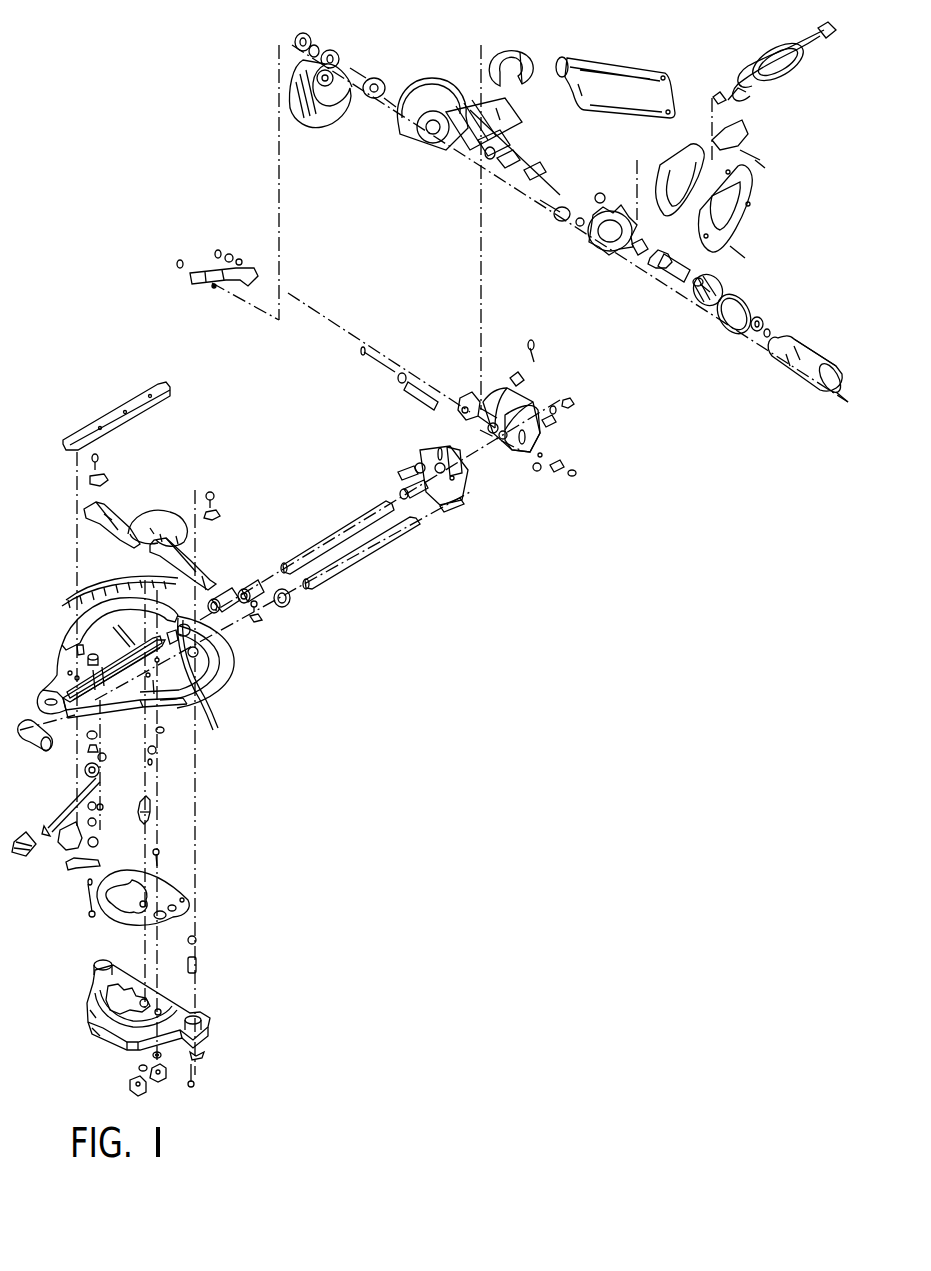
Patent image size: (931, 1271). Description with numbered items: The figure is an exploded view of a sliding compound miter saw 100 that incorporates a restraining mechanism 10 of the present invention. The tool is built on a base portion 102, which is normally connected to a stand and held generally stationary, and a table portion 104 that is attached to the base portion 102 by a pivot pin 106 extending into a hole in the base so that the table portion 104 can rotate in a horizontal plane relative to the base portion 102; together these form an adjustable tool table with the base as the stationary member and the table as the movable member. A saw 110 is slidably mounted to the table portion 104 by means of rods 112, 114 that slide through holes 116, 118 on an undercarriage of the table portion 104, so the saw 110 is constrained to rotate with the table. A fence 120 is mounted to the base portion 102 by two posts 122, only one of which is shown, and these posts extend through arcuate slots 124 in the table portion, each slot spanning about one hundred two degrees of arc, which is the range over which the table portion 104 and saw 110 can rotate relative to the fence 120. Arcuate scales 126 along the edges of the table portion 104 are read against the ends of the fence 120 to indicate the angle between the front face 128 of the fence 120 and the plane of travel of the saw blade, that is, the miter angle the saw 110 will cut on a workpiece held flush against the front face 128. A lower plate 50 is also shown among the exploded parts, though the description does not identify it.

The restraining mechanism 10 is at (130, 790).
The lower base plate 50 is at (156, 892).
The sliding compound miter saw 100 is at (545, 728).
The base portion 102 is at (165, 1000).
The table portion 104 is at (217, 652).
The pivot pin 106 is at (150, 810).
The saw 110 is at (420, 62).
The rod 112 is at (322, 540).
The rod 114 is at (368, 546).
The hole 116 is at (196, 692).
The hole 118 is at (208, 682).
The fence 120 is at (166, 525).
The post 122 is at (196, 966).
The arcuate slot 124 is at (83, 647).
The arcuate scale 126 is at (80, 596).
The front face 128 is at (107, 518).